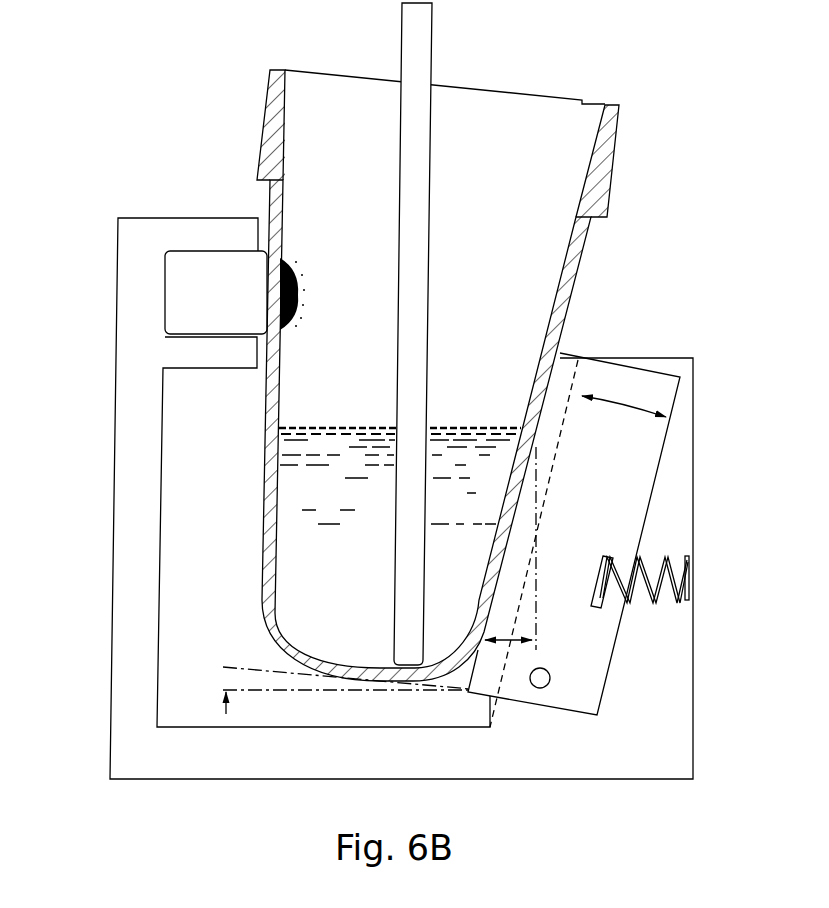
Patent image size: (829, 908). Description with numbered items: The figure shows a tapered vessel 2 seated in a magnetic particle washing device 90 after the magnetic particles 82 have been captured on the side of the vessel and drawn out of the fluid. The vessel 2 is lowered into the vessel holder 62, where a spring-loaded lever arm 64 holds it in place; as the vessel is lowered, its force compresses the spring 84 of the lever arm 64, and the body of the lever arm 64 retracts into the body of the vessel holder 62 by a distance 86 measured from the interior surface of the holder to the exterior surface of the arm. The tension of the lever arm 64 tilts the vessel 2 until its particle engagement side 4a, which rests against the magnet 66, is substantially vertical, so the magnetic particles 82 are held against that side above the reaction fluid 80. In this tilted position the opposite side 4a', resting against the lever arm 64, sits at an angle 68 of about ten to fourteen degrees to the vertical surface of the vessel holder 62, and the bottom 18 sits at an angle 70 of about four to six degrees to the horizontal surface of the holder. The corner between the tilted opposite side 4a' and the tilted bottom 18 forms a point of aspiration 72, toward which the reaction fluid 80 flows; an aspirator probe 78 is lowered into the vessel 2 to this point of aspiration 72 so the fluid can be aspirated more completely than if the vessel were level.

The vessel 2 is at (588, 96).
The particle engagement side 4a is at (242, 139).
The opposite side 4a' is at (616, 187).
The bottom 18 is at (375, 682).
The vessel holder 62 is at (111, 539).
The lever arm 64 is at (566, 355).
The magnet 66 is at (227, 304).
The angle 68 is at (500, 644).
The angle 70 is at (226, 664).
The point of aspiration 72 is at (409, 693).
The aspirator probe 78 is at (431, 18).
The reaction fluid 80 is at (333, 485).
The magnetic particles 82 is at (302, 283).
The spring 84 is at (676, 595).
The distance 86 is at (615, 403).
The magnetic particle washing device 90 is at (163, 177).